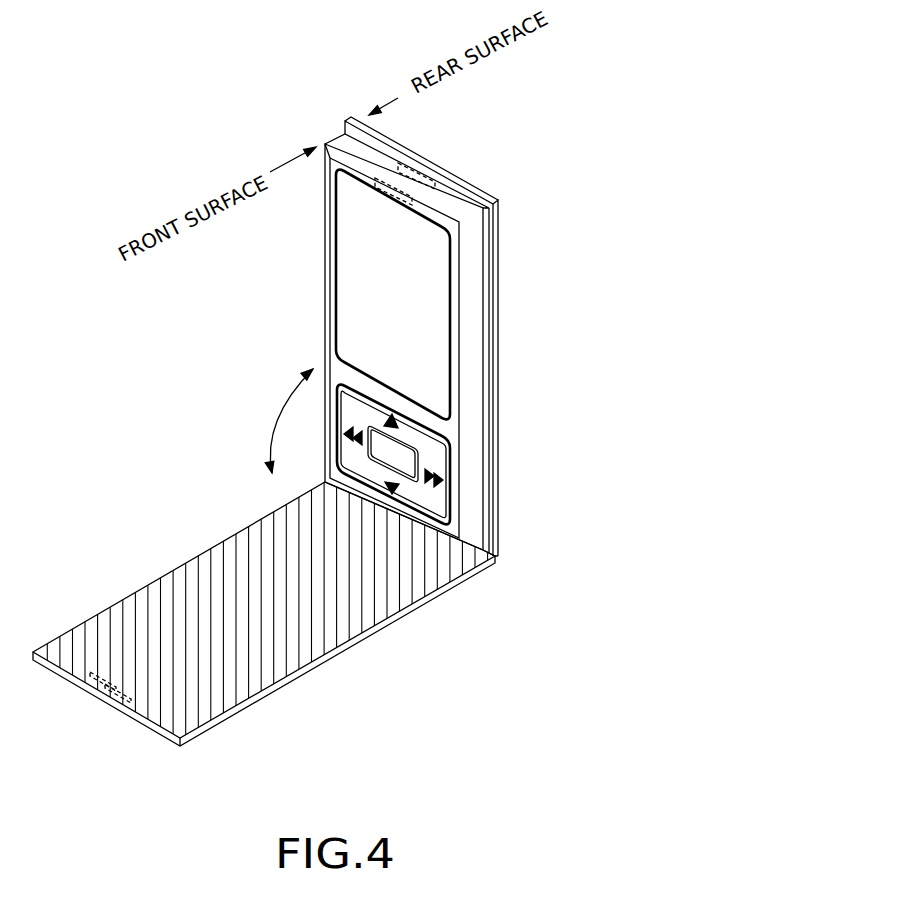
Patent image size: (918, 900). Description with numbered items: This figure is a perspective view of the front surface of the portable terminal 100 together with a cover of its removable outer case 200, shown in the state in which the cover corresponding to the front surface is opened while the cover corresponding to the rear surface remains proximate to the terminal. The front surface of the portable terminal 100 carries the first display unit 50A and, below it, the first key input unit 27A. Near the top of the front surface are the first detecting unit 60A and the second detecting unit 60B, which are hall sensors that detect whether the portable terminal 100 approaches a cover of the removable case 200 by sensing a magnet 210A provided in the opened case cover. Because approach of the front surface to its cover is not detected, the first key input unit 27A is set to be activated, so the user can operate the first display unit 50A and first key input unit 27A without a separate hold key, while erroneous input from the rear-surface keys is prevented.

The portable terminal 100 is at (315, 126).
The removable outer case 200 is at (468, 128).
The first display unit 50A is at (452, 328).
The first key input unit 27A is at (447, 493).
The first detecting unit 60A is at (412, 202).
The second detecting unit 60B is at (428, 181).
The magnet 210A is at (100, 695).